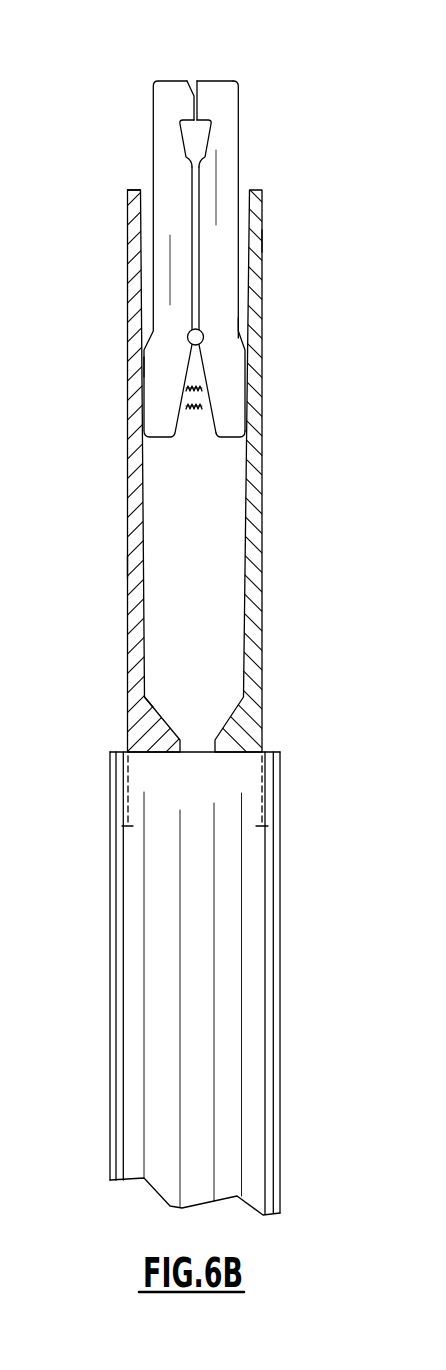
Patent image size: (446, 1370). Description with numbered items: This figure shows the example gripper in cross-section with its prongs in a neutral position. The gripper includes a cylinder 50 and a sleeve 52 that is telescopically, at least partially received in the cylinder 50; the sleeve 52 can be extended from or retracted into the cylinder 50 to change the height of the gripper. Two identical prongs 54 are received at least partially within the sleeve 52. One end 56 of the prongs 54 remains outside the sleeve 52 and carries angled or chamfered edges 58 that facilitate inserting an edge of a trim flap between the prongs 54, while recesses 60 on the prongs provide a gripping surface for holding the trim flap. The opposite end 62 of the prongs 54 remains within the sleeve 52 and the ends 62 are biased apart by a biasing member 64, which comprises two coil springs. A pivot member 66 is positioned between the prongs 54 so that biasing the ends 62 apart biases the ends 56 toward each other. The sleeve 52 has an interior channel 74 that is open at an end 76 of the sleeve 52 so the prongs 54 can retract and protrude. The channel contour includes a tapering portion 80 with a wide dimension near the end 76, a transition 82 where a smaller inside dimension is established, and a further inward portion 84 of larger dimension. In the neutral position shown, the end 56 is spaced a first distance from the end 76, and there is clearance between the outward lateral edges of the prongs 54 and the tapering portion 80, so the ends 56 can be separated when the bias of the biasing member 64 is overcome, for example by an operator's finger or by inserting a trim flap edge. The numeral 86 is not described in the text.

The cylinder 50 is at (110, 902).
The sleeve 52 is at (128, 498).
The prongs 54 is at (162, 172).
The end of the prongs 56 is at (221, 80).
The chamfered edges 58 is at (196, 80).
The recesses 60 is at (209, 131).
The opposite end of the prongs 62 is at (233, 438).
The biasing member 64 is at (196, 413).
The pivot member 66 is at (188, 334).
The interior channel 74 is at (146, 577).
The end of the sleeve 76 is at (130, 190).
The tapering portion 80 is at (246, 242).
The transition 82 is at (242, 329).
The portion of the channel 84 is at (143, 370).
The tube tapered portion 86 is at (160, 693).